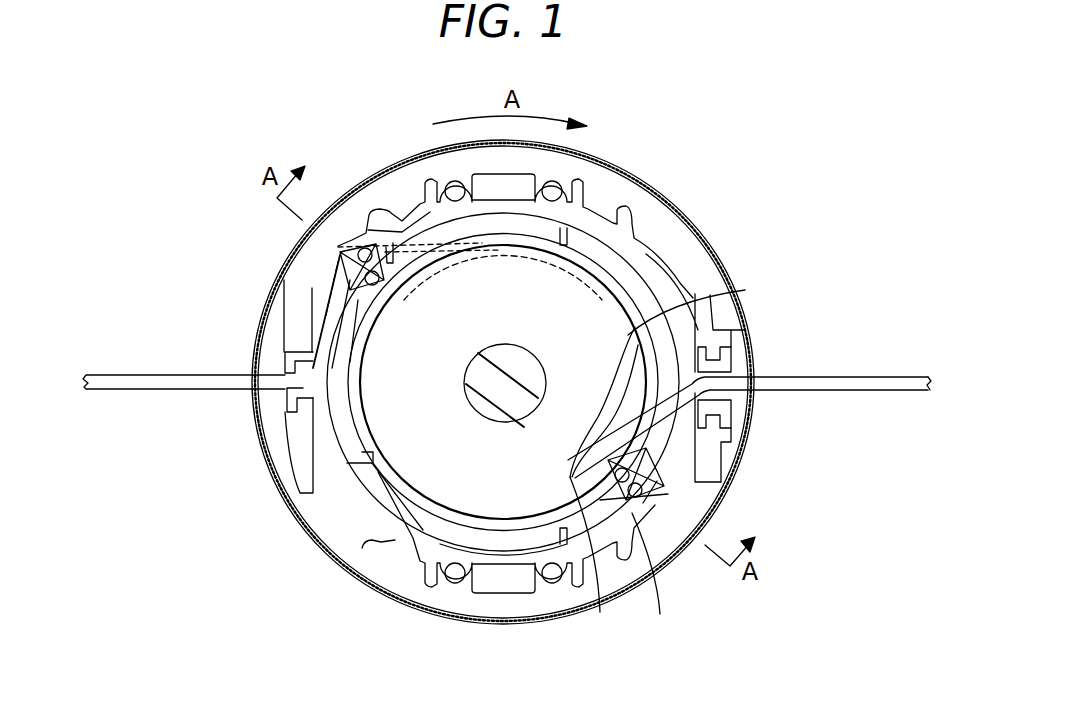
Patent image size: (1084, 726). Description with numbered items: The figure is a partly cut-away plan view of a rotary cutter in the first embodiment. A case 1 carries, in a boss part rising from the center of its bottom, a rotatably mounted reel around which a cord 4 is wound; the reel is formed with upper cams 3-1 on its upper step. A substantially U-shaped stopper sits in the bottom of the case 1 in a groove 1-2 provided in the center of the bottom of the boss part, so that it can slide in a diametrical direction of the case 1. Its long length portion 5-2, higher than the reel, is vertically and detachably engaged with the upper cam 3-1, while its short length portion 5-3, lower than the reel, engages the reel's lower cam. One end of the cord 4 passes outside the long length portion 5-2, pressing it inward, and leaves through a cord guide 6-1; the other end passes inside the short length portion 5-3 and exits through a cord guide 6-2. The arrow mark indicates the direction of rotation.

The case 1 is at (680, 209).
The groove 1-2 is at (624, 561).
The upper cam 3-1 is at (391, 252).
The cord 4 is at (197, 392).
The long length portion 5-2 is at (365, 277).
The short length portion 5-3 is at (668, 495).
The cord guide 6-1 is at (284, 352).
The cord guide 6-2 is at (740, 353).